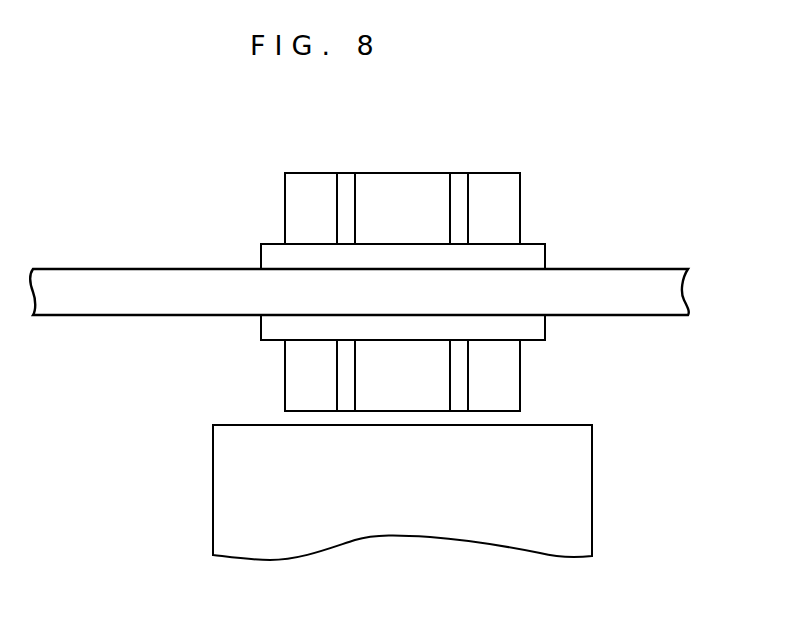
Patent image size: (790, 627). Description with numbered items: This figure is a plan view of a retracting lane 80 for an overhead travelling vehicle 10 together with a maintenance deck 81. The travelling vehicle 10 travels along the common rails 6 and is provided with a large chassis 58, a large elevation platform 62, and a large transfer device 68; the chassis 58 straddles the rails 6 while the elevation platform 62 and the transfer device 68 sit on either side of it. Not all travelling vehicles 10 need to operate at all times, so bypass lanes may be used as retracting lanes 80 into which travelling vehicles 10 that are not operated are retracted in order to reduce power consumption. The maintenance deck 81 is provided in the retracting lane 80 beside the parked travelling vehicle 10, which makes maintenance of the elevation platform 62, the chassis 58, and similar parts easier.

The rails 6 is at (618, 303).
The travelling vehicle 10 is at (548, 243).
The chassis 58 is at (268, 255).
The elevation platform 62 is at (489, 187).
The transfer device 68 is at (457, 199).
The retracting lane 80 is at (150, 588).
The maintenance deck 81 is at (578, 488).